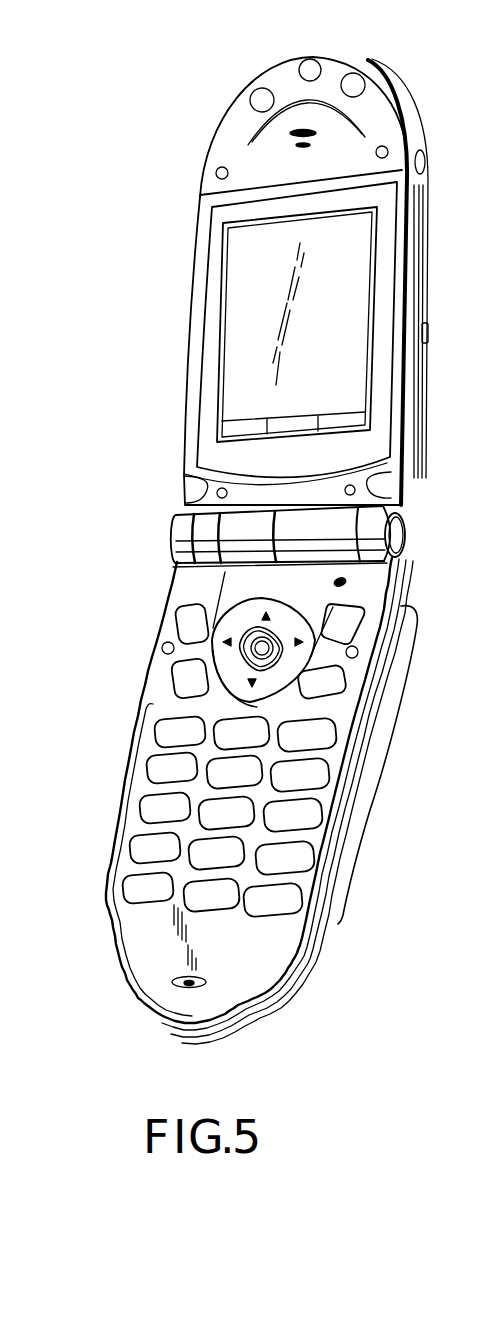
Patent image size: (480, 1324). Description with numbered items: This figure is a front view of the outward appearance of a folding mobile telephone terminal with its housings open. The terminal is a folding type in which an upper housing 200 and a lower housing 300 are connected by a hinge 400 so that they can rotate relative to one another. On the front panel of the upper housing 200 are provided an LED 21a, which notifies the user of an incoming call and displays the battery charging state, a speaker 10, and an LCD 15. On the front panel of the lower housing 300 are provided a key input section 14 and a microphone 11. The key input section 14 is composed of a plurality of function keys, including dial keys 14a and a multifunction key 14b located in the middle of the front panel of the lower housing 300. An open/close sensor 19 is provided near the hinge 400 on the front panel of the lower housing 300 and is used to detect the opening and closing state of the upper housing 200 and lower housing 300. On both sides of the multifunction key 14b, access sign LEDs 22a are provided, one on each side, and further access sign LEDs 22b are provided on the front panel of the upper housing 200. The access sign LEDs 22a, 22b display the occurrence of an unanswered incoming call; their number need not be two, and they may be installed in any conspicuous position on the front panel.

The speaker 10 is at (302, 131).
The microphone 11 is at (190, 985).
The key input section 14 is at (379, 745).
The dial keys 14a is at (122, 800).
The multifunction key 14b is at (243, 617).
The LCD 15 is at (360, 308).
The open/close sensor 19 is at (348, 580).
The LED 21a is at (313, 58).
The access sign LEDs 22a is at (162, 648).
The access sign LEDs 22b is at (388, 149).
The upper housing 200 is at (293, 495).
The lower housing 300 is at (254, 817).
The hinge 400 is at (198, 542).